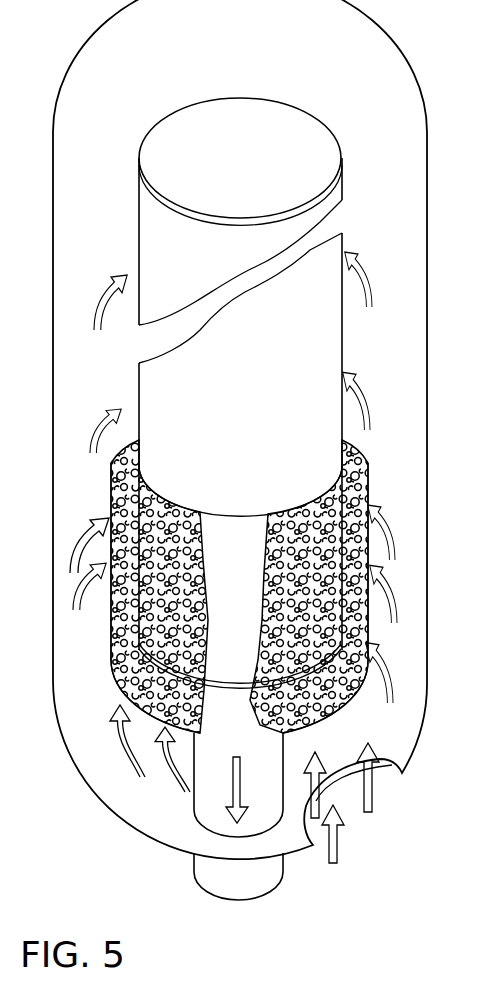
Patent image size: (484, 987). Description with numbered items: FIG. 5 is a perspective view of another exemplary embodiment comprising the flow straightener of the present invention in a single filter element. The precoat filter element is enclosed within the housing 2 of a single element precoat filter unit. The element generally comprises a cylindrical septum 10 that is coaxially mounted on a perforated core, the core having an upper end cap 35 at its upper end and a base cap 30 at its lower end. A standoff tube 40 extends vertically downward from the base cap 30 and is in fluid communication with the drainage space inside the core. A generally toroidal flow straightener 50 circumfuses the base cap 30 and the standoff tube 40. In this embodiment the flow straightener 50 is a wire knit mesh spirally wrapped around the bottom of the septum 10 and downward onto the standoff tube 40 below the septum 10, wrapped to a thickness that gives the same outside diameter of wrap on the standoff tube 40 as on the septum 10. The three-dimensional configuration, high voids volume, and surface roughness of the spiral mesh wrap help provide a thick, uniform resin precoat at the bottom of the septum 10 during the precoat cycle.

The housing 2 is at (428, 160).
The septum 10 is at (343, 344).
The upper end cap 35 is at (228, 164).
The base cap 30 is at (233, 683).
The flow straightener 50 is at (369, 481).
The standoff tube 40 is at (193, 803).